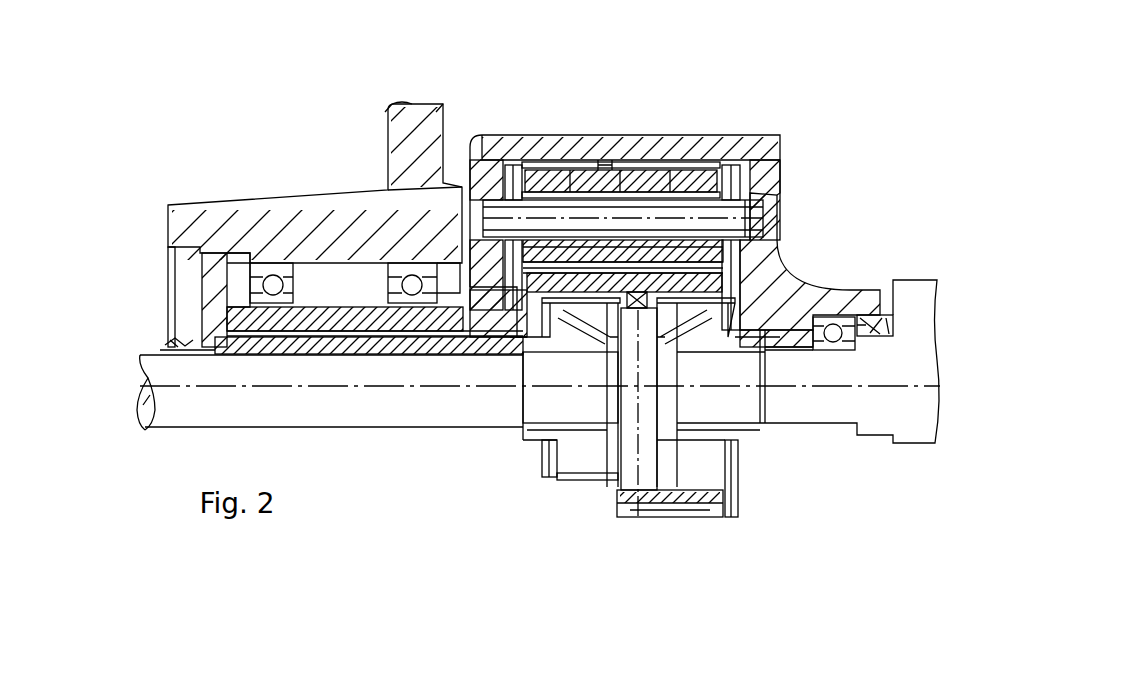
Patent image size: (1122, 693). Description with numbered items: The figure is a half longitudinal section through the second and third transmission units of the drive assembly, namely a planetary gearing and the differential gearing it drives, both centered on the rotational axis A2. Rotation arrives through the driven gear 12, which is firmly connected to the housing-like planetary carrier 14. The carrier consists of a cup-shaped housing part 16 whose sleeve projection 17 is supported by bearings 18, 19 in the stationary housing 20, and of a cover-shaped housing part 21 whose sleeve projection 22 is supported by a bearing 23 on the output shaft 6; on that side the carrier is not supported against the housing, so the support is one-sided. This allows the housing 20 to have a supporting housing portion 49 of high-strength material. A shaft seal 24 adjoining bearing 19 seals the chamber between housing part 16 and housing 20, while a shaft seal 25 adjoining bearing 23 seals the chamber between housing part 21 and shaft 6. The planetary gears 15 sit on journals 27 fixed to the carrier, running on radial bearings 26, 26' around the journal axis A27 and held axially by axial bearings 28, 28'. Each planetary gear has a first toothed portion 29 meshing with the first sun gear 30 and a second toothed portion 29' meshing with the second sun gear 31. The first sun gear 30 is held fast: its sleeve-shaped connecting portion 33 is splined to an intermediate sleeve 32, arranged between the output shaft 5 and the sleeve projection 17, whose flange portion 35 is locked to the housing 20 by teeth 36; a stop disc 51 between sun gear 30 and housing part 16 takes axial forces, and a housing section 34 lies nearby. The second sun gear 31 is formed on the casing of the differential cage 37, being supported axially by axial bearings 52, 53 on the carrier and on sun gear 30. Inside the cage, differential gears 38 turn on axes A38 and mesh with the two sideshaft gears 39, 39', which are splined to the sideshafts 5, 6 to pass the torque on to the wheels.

The output shaft 5 is at (203, 413).
The output shaft 6 is at (877, 413).
The driven gear 12 is at (698, 135).
The planetary carrier 14 is at (762, 128).
The planetary gears 15 is at (624, 135).
The cup-shaped housing part 16 is at (490, 133).
The sleeve projection 17 is at (340, 357).
The bearing 18 is at (278, 307).
The bearing 19 is at (370, 330).
The housing 20 is at (268, 197).
The cover-shaped housing part 21 is at (780, 253).
The sleeve projection 22 is at (838, 315).
The bearing 23 is at (840, 352).
The shaft seal 24 is at (380, 192).
The shaft seal 25 is at (883, 300).
The radial bearing 26 is at (621, 109).
The radial bearing 26' is at (624, 166).
The journal 27 is at (778, 217).
The axial bearing 28 is at (510, 200).
The axial bearing 28' is at (739, 209).
The first toothed portion 29 is at (621, 138).
The second toothed portion 29' is at (657, 198).
The first sun gear 30 is at (583, 135).
The second sun gear 31 is at (665, 517).
The intermediate sleeve 32 is at (376, 430).
The sleeve-shaped connecting portion 33 is at (503, 337).
The housing section 34 is at (487, 337).
The flange portion 35 is at (210, 292).
The teeth 36 is at (210, 260).
The input part 37 is at (705, 500).
The differential gears 38 is at (600, 480).
The sideshaft gear 39 is at (556, 488).
The sideshaft gear 39' is at (722, 480).
The supporting housing portion 49 is at (323, 220).
The stop disc 51 is at (423, 110).
The axial bearing 52 is at (603, 135).
The axial bearing 53 is at (773, 333).
The rotational axis A2 is at (308, 388).
The journal axis A27 is at (785, 213).
The rotational axis A38 is at (643, 430).